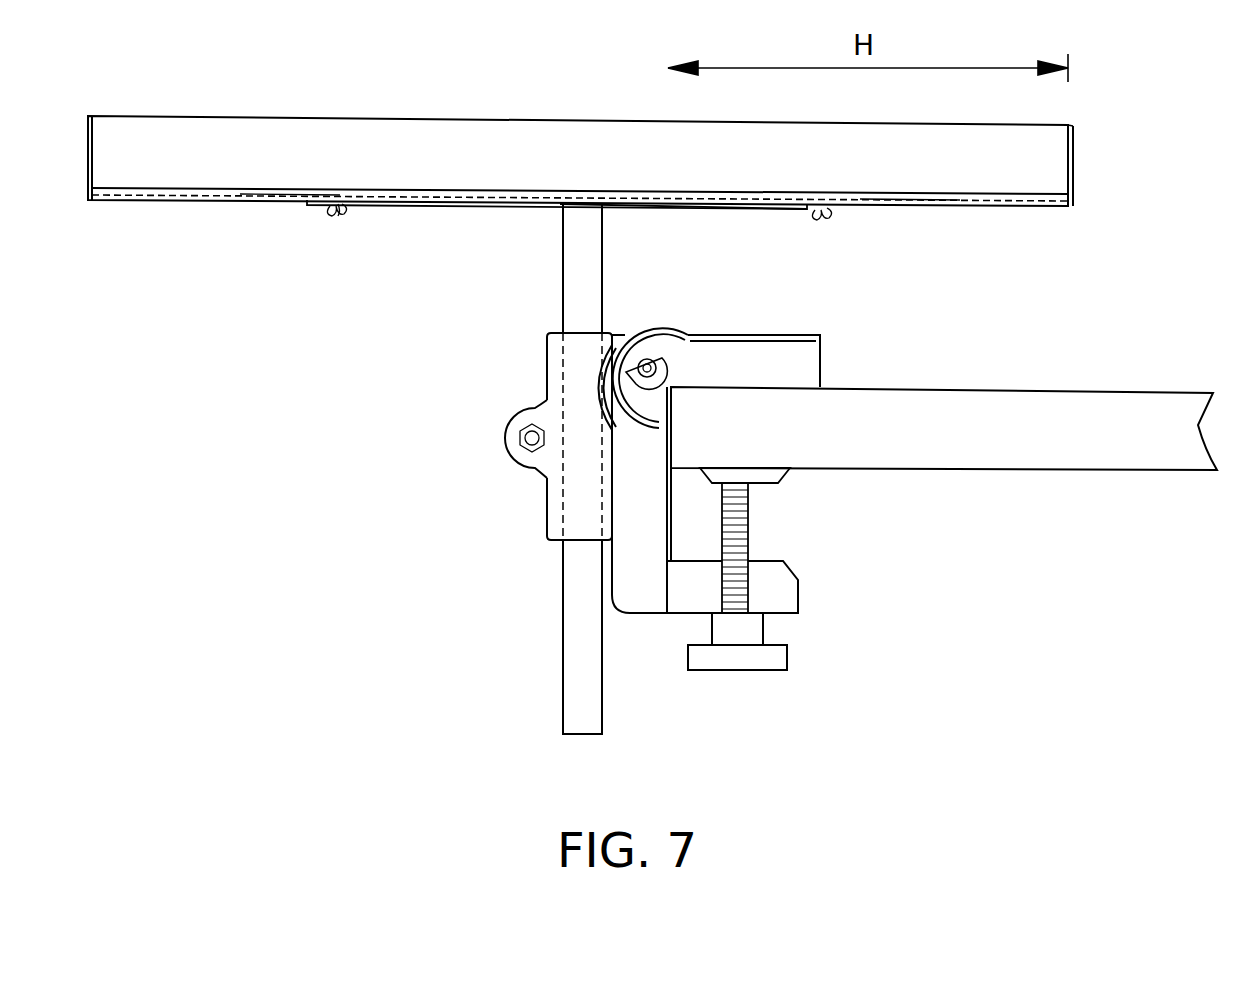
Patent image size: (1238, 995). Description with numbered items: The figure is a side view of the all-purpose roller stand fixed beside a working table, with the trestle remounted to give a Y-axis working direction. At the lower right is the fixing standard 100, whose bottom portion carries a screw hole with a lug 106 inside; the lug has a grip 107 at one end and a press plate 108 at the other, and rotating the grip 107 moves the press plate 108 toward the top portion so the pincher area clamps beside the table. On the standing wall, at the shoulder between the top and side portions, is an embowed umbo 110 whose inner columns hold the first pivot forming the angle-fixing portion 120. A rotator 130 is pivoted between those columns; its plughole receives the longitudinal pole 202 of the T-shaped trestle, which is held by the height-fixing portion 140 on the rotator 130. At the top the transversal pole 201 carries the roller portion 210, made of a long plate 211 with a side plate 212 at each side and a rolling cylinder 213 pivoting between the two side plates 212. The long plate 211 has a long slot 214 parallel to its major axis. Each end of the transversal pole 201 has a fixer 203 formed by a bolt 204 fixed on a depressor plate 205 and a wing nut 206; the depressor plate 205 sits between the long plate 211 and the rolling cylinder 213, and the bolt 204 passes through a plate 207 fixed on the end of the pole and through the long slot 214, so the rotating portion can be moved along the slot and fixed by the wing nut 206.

The fixing standard 100 is at (790, 595).
The lug 106 is at (752, 506).
The grip 107 is at (778, 657).
The press plate 108 is at (760, 474).
The embowed umbo 110 is at (657, 333).
The angle-fixing portion 120 is at (652, 368).
The rotator 130 is at (552, 517).
The height-fixing portion 140 is at (518, 432).
The transversal pole 201 is at (780, 212).
The longitudinal pole 202 is at (582, 283).
The fixer 203 is at (388, 278).
The bolt 204 is at (350, 217).
The depressor plate 205 is at (292, 200).
The wing nut 206 is at (350, 213).
The plate 207 is at (683, 201).
The roller portion 210 is at (443, 110).
The long plate 211 is at (1030, 198).
The side plate 212 is at (1072, 145).
The rolling cylinder 213 is at (195, 150).
The long slot 214 is at (127, 203).